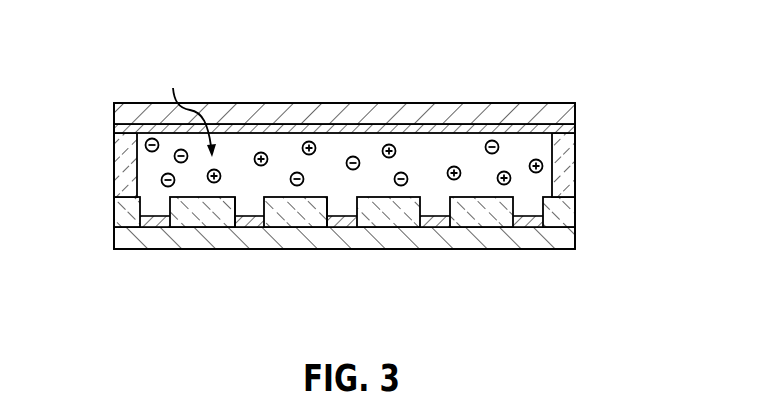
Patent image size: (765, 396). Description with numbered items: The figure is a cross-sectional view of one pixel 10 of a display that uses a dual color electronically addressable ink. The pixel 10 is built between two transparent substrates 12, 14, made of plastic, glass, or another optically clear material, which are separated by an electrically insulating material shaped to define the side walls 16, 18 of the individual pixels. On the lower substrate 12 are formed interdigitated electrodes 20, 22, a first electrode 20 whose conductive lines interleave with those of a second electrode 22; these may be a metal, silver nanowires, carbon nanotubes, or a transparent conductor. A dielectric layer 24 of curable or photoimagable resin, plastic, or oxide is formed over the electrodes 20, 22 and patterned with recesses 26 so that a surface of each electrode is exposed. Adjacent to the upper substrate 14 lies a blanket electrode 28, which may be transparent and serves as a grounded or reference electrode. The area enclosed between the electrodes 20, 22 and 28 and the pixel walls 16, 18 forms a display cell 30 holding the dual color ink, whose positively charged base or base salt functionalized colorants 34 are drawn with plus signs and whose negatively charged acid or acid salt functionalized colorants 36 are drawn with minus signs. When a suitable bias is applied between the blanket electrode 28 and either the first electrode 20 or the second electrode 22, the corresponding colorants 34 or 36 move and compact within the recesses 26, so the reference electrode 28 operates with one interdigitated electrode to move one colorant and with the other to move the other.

The pixel 10 is at (486, 80).
The transparent substrate 12 is at (560, 237).
The transparent substrate 14 is at (550, 110).
The side wall 16 is at (122, 181).
The side wall 18 is at (565, 160).
The first electrode 20 is at (155, 222).
The second electrode 22 is at (245, 222).
The dielectric layer 24 is at (558, 210).
The recesses 26 is at (237, 207).
The blanket electrode 28 is at (574, 128).
The display cell 30 is at (187, 111).
The base/base salt functionalized colorants 34 is at (262, 152).
The acid/acid salt functionalized colorants 36 is at (174, 156).